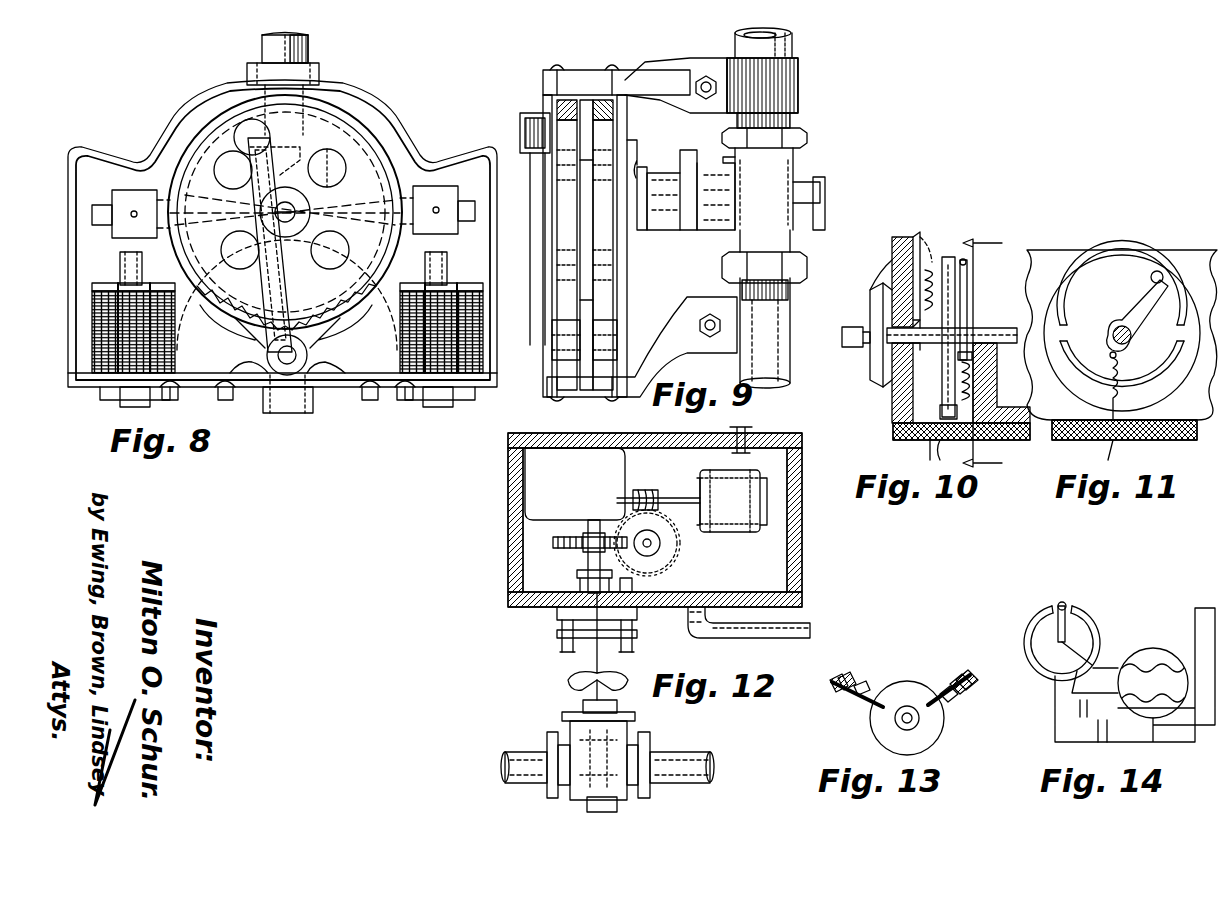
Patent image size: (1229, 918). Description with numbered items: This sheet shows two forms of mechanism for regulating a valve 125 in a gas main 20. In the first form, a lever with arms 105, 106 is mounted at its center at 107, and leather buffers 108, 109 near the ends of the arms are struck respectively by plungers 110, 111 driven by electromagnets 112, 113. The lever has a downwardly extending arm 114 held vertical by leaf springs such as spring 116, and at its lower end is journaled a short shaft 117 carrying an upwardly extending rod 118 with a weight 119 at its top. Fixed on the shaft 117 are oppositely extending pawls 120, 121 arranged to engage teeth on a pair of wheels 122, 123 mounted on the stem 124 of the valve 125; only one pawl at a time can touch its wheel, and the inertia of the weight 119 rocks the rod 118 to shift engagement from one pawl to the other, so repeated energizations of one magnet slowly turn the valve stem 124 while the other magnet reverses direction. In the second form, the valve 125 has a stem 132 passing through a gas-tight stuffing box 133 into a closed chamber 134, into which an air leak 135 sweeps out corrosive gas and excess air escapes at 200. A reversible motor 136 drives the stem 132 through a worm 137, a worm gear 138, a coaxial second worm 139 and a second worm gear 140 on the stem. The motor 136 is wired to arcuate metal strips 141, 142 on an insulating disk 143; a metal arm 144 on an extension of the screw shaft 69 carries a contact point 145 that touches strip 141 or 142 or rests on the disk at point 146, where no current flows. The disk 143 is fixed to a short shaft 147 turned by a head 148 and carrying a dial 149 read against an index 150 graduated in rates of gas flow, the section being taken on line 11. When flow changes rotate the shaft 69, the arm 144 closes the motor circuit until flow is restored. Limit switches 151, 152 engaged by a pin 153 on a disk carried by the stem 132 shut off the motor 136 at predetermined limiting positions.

In FIG. 8, the gas main 20 is at (260, 48).
In FIG. 9, the gas main 20 is at (785, 50).
In FIG. 12, the gas main 20 is at (690, 752).
In FIG. 8, the lever arm 105 is at (222, 225).
In FIG. 8, the lever arm 106 is at (373, 202).
In FIG. 8, the lever mounting 107 is at (296, 212).
In FIG. 8, the leather buffer 108 is at (122, 190).
In FIG. 8, the leather buffer 109 is at (445, 190).
In FIG. 8, the plunger 110 is at (120, 262).
In FIG. 8, the plunger 111 is at (447, 270).
In FIG. 8, the electromagnet 112 is at (108, 360).
In FIG. 8, the electromagnet 113 is at (445, 365).
In FIG. 8, the downwardly extending arm 114 is at (352, 306).
In FIG. 9, the downwardly extending arm 114 is at (587, 243).
In FIG. 8, the leaf spring 116 is at (326, 375).
In FIG. 9, the leaf spring 116 is at (583, 390).
In FIG. 8, the short shaft 117 is at (286, 362).
In FIG. 9, the short shaft 117 is at (535, 358).
In FIG. 8, the rod 118 is at (250, 175).
In FIG. 9, the rod 118 is at (531, 210).
In FIG. 8, the weight 119 is at (240, 130).
In FIG. 9, the weight 119 is at (520, 121).
In FIG. 8, the pawl 120 is at (245, 338).
In FIG. 9, the pawl 120 is at (612, 340).
In FIG. 8, the pawl 121 is at (325, 330).
In FIG. 9, the pawl 121 is at (562, 330).
In FIG. 9, the toothed wheel 122 is at (557, 104).
In FIG. 9, the toothed wheel 123 is at (602, 100).
In FIG. 9, the valve stem 124 is at (640, 242).
In FIG. 9, the valve 125 is at (805, 170).
In FIG. 12, the valve 125 is at (570, 735).
In FIG. 12, the valve stem 132 is at (600, 665).
In FIG. 12, the stuffing box 133 is at (584, 648).
In FIG. 12, the closed chamber 134 is at (802, 562).
In FIG. 12, the air leak 135 is at (800, 628).
In FIG. 12, the motor 136 is at (745, 532).
In FIG. 14, the motor 136 is at (1148, 655).
In FIG. 12, the worm 137 is at (647, 490).
In FIG. 12, the worm gear 138 is at (680, 553).
In FIG. 12, the second worm 139 is at (655, 548).
In FIG. 12, the second worm gear 140 is at (565, 550).
In FIG. 10, the arcuate metal strip 141 is at (928, 245).
In FIG. 11, the arcuate metal strip 141 is at (1090, 280).
In FIG. 14, the arcuate metal strip 141 is at (1028, 630).
In FIG. 11, the arcuate metal strip 142 is at (1165, 390).
In FIG. 14, the arcuate metal strip 142 is at (1090, 625).
In FIG. 10, the insulating disk 143 is at (947, 257).
In FIG. 11, the insulating disk 143 is at (1125, 258).
In FIG. 10, the metal arm 144 is at (970, 300).
In FIG. 11, the metal arm 144 is at (1135, 300).
In FIG. 14, the metal arm 144 is at (1050, 613).
In FIG. 10, the contact point 145 is at (968, 272).
In FIG. 11, the contact point 145 is at (1200, 246).
In FIG. 14, the contact point 145 is at (1062, 602).
In FIG. 11, the neutral point 146 is at (1164, 278).
In FIG. 10, the short shaft 147 is at (897, 385).
In FIG. 10, the head 148 is at (848, 347).
In FIG. 10, the dial 149 is at (870, 312).
In FIG. 10, the index 150 is at (880, 272).
In FIG. 12, the limit switch 151 is at (572, 592).
In FIG. 13, the limit switch 151 is at (852, 696).
In FIG. 14, the limit switch 151 is at (1078, 712).
In FIG. 12, the limit switch 152 is at (645, 575).
In FIG. 13, the limit switch 152 is at (953, 696).
In FIG. 14, the limit switch 152 is at (1107, 730).
In FIG. 12, the pin 153 is at (557, 620).
In FIG. 13, the pin 153 is at (897, 693).
In FIG. 10, the screw shaft 69 is at (1013, 328).
In FIG. 10, the section line 11 is at (987, 353).
In FIG. 12, the air escape means 200 is at (748, 427).